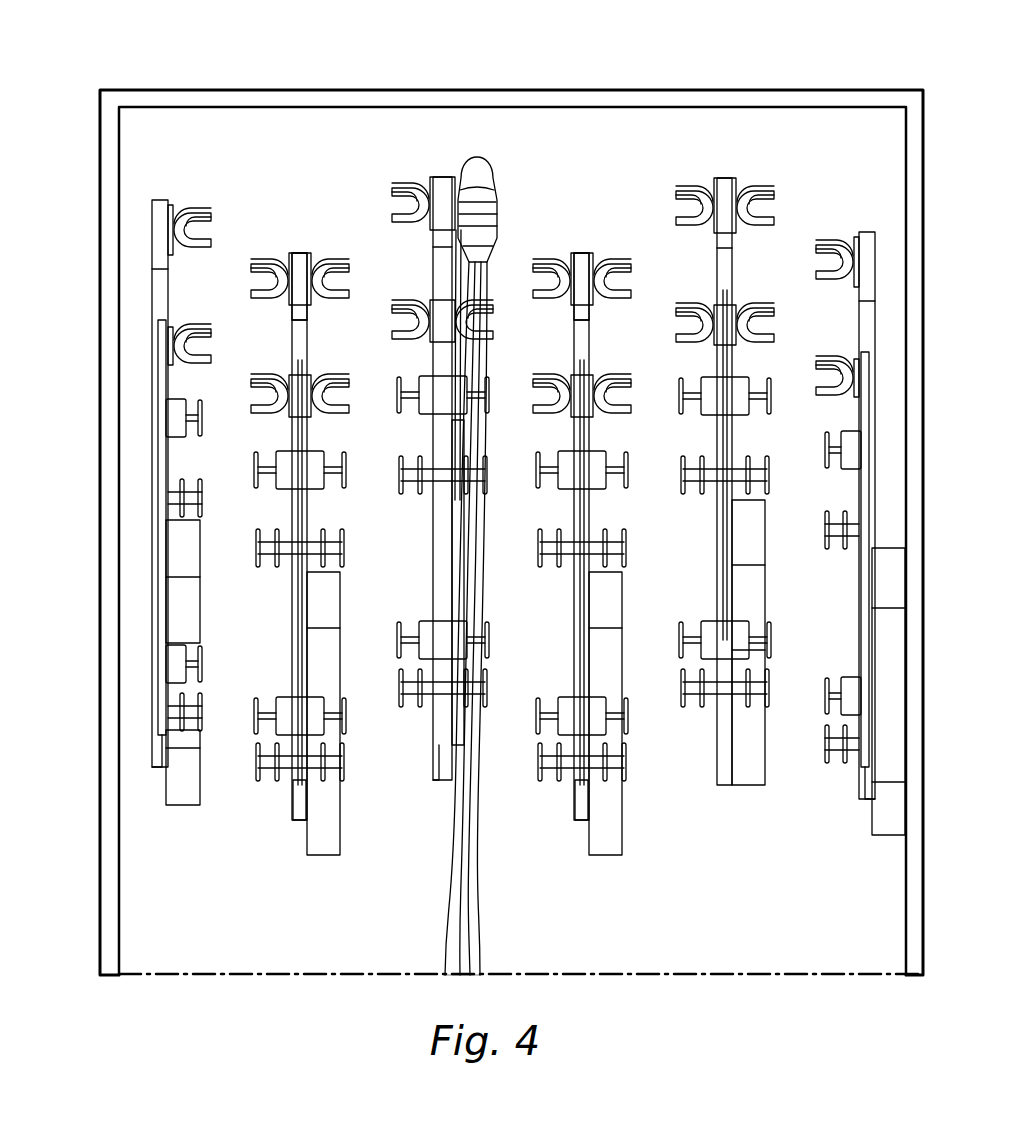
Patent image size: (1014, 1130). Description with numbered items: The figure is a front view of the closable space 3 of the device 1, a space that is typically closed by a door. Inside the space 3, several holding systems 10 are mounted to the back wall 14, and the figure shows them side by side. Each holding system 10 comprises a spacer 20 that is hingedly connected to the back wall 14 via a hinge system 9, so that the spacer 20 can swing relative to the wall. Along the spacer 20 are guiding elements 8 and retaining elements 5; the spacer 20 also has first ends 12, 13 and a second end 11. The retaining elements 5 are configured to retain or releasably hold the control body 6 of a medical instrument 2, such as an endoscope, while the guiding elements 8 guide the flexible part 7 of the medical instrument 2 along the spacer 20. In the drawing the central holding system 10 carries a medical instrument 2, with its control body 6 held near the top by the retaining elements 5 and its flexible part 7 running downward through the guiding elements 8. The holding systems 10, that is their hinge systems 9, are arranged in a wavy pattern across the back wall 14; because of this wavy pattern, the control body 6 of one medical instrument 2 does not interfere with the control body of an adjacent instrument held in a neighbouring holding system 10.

The device 1 is at (88, 76).
The medical instrument 2 is at (487, 550).
The space 3 is at (773, 140).
The retaining elements 5 is at (262, 283).
The control body 6 is at (490, 215).
The flexible part 7 is at (475, 935).
The guiding elements 8 is at (256, 472).
The hinge system 9 is at (327, 845).
The holding system 10 is at (207, 198).
The second end 11 is at (292, 800).
The first end 12 is at (300, 253).
The first end 13 is at (300, 372).
The back wall 14 is at (210, 918).
The spacer 20 is at (298, 610).